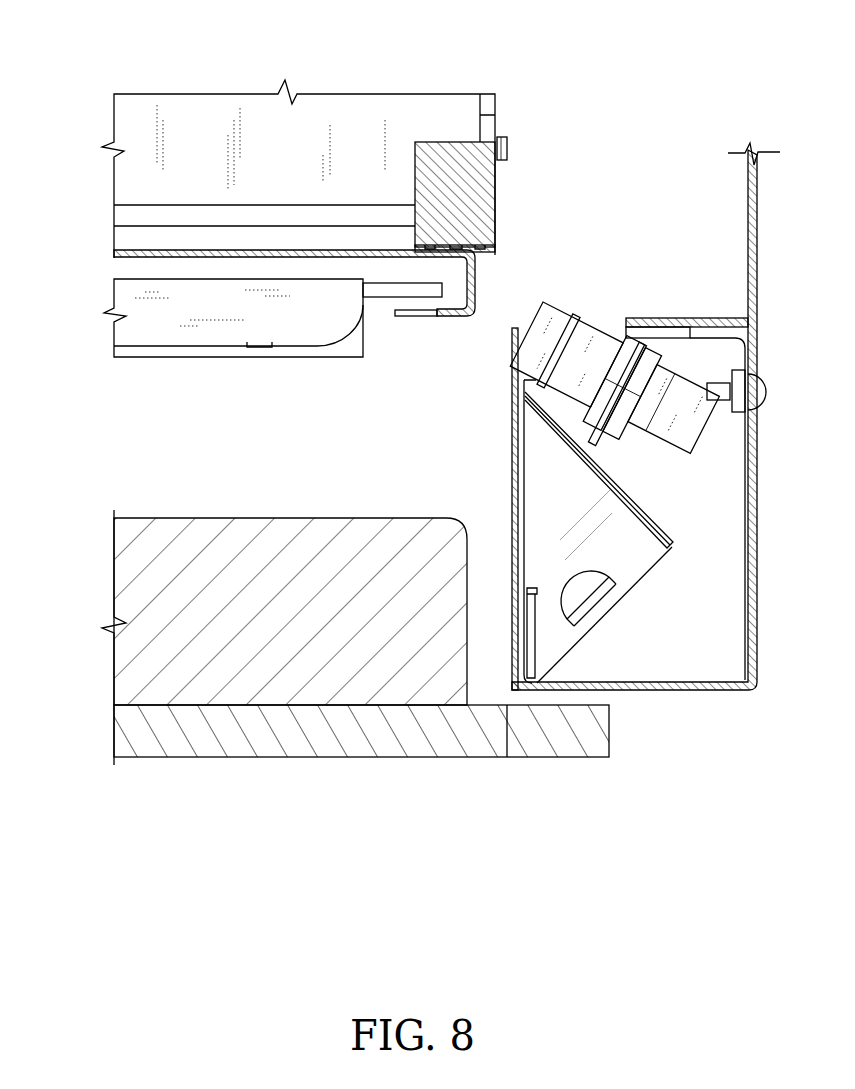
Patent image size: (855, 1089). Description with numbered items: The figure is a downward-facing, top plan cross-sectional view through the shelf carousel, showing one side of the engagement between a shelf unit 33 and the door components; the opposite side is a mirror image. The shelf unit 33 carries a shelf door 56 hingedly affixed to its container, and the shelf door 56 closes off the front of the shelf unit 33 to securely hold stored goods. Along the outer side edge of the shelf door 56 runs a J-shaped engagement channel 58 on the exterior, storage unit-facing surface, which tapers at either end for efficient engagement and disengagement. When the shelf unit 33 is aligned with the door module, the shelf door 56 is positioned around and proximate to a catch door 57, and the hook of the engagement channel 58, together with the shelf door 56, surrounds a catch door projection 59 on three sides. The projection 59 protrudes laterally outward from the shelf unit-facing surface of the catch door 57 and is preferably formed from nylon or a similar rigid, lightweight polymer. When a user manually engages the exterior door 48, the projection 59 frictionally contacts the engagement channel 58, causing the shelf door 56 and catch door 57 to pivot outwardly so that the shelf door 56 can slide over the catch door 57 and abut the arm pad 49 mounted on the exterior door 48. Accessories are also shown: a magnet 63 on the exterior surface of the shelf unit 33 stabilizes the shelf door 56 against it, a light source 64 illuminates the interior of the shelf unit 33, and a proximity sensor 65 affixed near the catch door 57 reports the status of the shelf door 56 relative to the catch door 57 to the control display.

The shelf unit 33 is at (168, 60).
The exterior door 48 is at (371, 758).
The arm pad 49 is at (158, 530).
The shelf door 56 is at (150, 251).
The catch door 57 is at (335, 345).
The engagement channel 58 is at (463, 318).
The catch door projection 59 is at (433, 290).
The magnet 63 is at (473, 192).
The light source 64 is at (643, 562).
The proximity sensor 65 is at (548, 328).